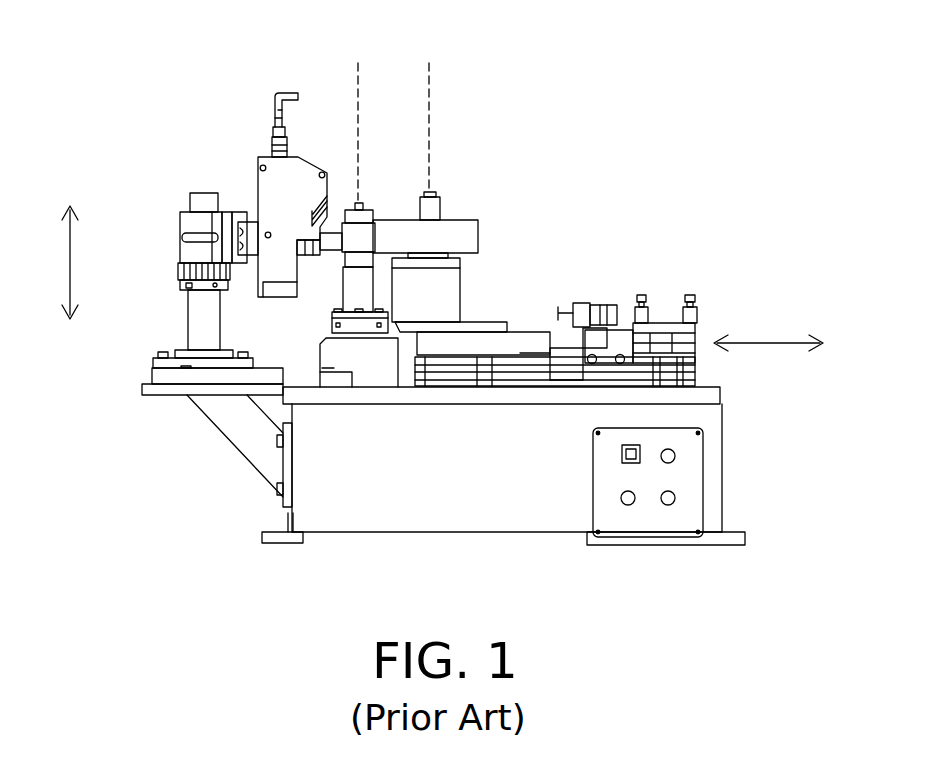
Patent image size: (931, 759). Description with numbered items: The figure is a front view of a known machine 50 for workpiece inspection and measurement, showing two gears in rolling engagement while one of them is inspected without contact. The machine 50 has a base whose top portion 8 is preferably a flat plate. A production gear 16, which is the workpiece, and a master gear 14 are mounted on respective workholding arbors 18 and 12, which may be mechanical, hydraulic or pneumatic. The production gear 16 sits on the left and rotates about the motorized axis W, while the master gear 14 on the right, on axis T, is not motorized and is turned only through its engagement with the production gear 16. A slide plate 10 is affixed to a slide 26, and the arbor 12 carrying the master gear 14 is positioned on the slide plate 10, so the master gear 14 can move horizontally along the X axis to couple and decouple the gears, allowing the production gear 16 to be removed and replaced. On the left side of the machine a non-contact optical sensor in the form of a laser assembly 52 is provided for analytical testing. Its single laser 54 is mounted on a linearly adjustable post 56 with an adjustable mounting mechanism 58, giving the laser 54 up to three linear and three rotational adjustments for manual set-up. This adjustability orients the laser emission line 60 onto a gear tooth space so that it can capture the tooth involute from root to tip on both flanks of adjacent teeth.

The top portion 8 is at (705, 395).
The slide plate 10 is at (487, 322).
The workholding arbor 12 is at (460, 278).
The master gear 14 is at (462, 228).
The production gear 16 is at (370, 237).
The workholding arbor 18 is at (360, 292).
The slide 26 is at (527, 340).
The machine 50 is at (638, 259).
The laser assembly 52 is at (221, 218).
The laser 54 is at (270, 192).
The linearly adjustable post 56 is at (200, 323).
The adjustable mounting mechanism 58 is at (190, 255).
The laser emission line 60 is at (332, 243).